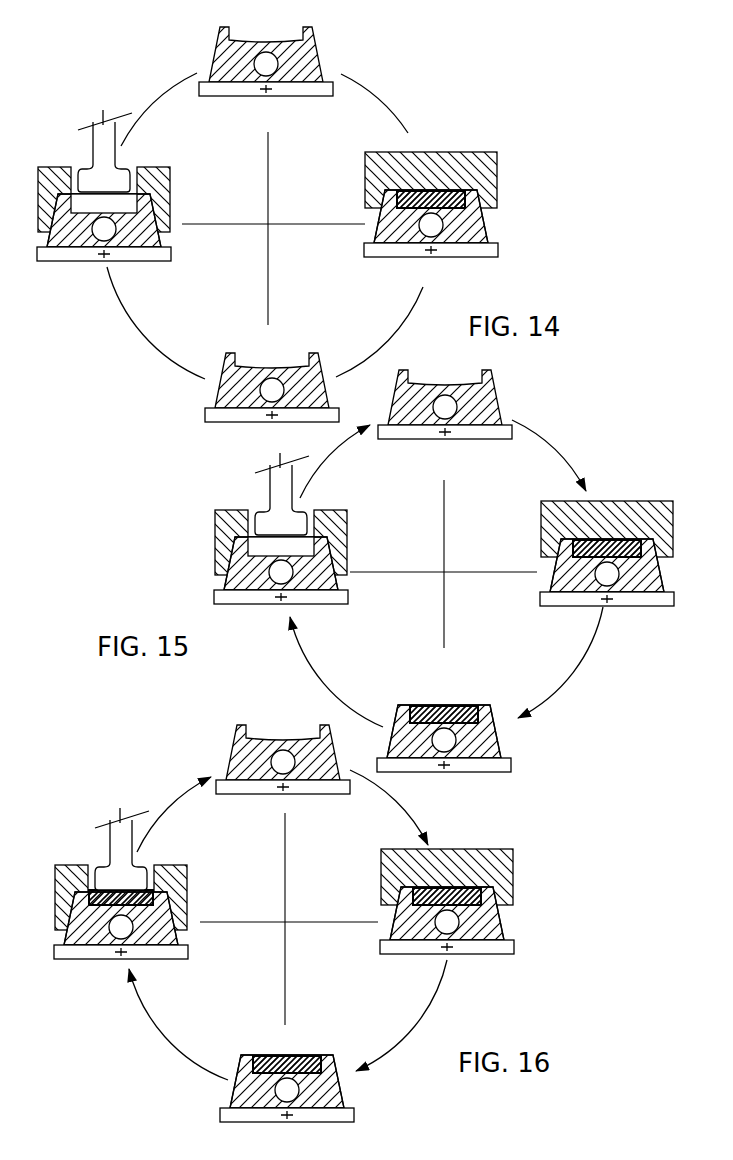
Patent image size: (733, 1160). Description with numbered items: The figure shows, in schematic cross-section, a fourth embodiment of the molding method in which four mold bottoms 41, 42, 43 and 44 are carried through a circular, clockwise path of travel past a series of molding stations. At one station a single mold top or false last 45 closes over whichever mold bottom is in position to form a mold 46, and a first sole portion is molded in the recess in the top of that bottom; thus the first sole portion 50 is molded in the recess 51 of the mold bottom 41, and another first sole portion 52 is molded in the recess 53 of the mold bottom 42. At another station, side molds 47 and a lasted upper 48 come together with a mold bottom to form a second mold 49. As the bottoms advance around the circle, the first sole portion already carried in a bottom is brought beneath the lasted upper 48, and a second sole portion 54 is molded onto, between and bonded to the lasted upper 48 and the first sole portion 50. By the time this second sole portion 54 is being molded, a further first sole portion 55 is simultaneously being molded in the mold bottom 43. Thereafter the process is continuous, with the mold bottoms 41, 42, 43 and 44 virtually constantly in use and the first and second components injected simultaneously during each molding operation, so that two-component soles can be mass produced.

In FIG. 14, the mold bottom 41 is at (445, 258).
In FIG. 15, the mold bottom 41 is at (500, 765).
In FIG. 16, the mold bottom 41 is at (167, 958).
In FIG. 14, the mold bottom 42 is at (302, 92).
In FIG. 15, the mold bottom 42 is at (630, 600).
In FIG. 16, the mold bottom 42 is at (345, 1115).
In FIG. 14, the mold bottom 43 is at (165, 252).
In FIG. 15, the mold bottom 43 is at (468, 440).
In FIG. 16, the mold bottom 43 is at (478, 948).
In FIG. 14, the mold bottom 44 is at (208, 418).
In FIG. 15, the mold bottom 44 is at (335, 600).
In FIG. 16, the mold bottom 44 is at (308, 788).
In FIG. 14, the mold top or false last 45 is at (497, 178).
In FIG. 15, the mold top or false last 45 is at (665, 520).
In FIG. 16, the mold top or false last 45 is at (508, 882).
In FIG. 14, the mold 46 is at (467, 128).
In FIG. 15, the mold 46 is at (589, 493).
In FIG. 16, the mold 46 is at (540, 859).
In FIG. 14, the side molds 47 is at (160, 186).
In FIG. 15, the side molds 47 is at (345, 538).
In FIG. 16, the side molds 47 is at (58, 880).
In FIG. 14, the lasted upper 48 is at (112, 158).
In FIG. 15, the lasted upper 48 is at (278, 494).
In FIG. 16, the lasted upper 48 is at (118, 862).
In FIG. 14, the mold 49 is at (80, 148).
In FIG. 15, the mold 49 is at (216, 506).
In FIG. 16, the mold 49 is at (88, 830).
In FIG. 14, the first sole portion 50 is at (440, 192).
In FIG. 15, the first sole portion 50 is at (462, 706).
In FIG. 16, the first sole portion 50 is at (158, 912).
In FIG. 14, the recess 51 is at (378, 230).
In FIG. 15, the first sole portion 52 is at (607, 543).
In FIG. 16, the first sole portion 52 is at (308, 1056).
In FIG. 14, the recess 53 is at (300, 47).
In FIG. 16, the second sole portion 54 is at (152, 887).
In FIG. 16, the first sole portion 55 is at (470, 888).